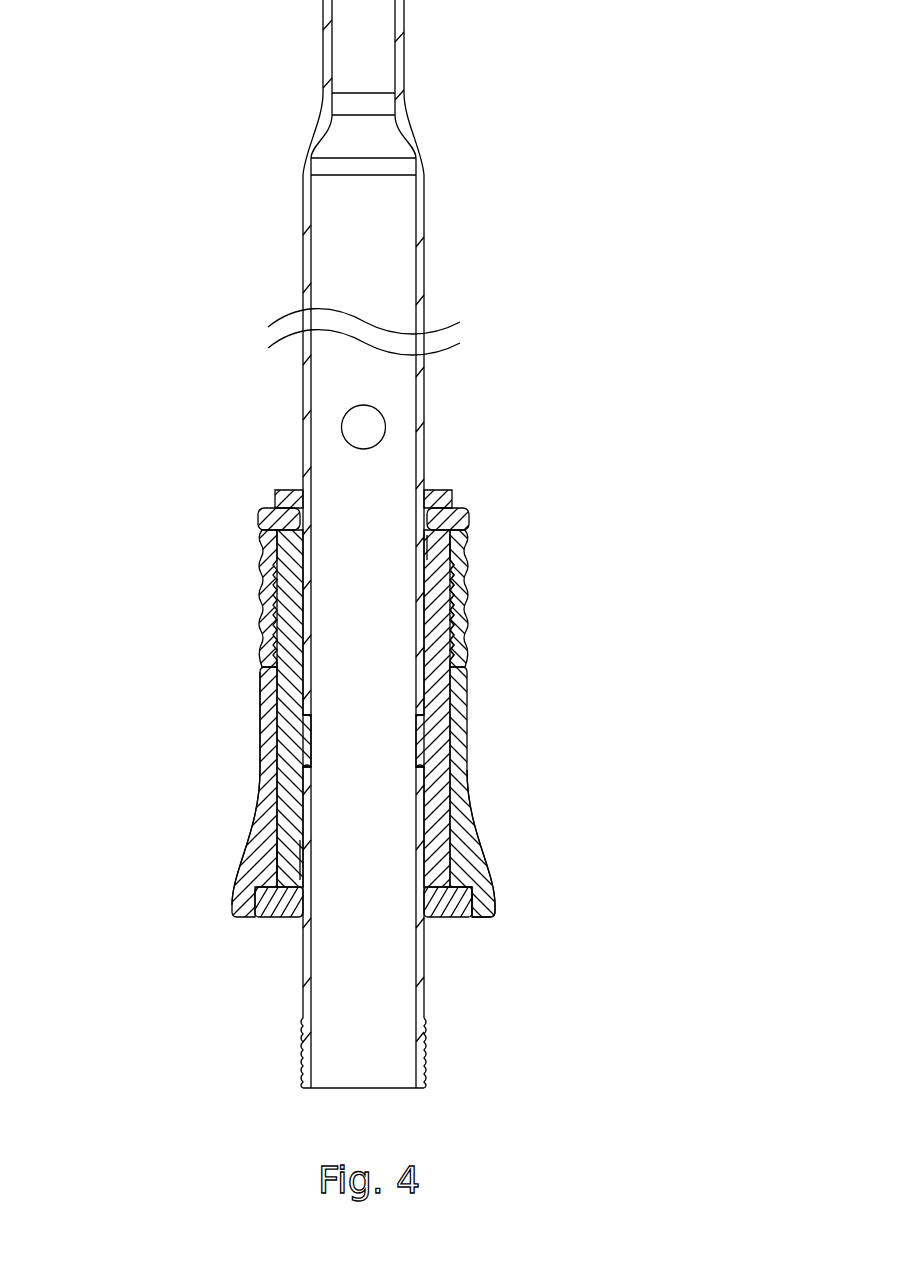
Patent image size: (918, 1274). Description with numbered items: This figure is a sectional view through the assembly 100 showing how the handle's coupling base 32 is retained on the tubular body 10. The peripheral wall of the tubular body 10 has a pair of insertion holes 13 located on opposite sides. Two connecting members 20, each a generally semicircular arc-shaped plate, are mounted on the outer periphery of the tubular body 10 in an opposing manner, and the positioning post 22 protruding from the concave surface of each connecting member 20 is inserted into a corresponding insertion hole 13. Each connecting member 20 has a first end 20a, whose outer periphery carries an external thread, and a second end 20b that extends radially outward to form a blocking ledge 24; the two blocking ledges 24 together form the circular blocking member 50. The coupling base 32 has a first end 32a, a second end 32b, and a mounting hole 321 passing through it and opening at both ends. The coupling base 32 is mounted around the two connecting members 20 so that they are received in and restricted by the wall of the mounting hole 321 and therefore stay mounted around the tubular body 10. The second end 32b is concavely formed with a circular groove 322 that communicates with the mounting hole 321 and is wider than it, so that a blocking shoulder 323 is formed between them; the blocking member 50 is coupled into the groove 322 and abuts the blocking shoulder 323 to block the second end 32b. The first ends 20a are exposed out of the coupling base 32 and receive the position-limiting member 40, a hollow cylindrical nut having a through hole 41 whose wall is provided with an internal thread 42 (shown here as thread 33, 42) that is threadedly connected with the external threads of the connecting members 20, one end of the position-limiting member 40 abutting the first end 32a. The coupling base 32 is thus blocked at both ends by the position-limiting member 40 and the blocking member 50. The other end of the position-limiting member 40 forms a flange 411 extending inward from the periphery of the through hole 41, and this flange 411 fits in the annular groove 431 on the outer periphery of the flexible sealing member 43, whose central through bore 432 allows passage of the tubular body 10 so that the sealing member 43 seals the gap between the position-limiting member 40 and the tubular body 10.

The sampling device assembly 100 is at (375, 544).
The tubular body 10 is at (303, 174).
The insertion hole 13 is at (303, 793).
The connecting member 20 is at (287, 712).
The first end 20a is at (462, 553).
The second end 20b is at (293, 853).
The positioning post 22 is at (308, 740).
The blocking ledge 24 is at (432, 976).
The blocking member 50 is at (457, 917).
The coupling base 32 is at (470, 763).
The first end 32a is at (262, 680).
The second end 32b is at (243, 915).
The mounting hole 321 is at (450, 838).
The groove 322 is at (497, 900).
The blocking shoulder 323 is at (470, 870).
The internal thread 33 is at (572, 610).
The internal thread 42 is at (462, 616).
The position-limiting member 40 is at (257, 557).
The through hole 41 is at (468, 518).
The flange 411 is at (177, 486).
The annular groove 431 is at (262, 517).
The flexible sealing member 43 is at (290, 490).
The through bore 432 is at (442, 490).